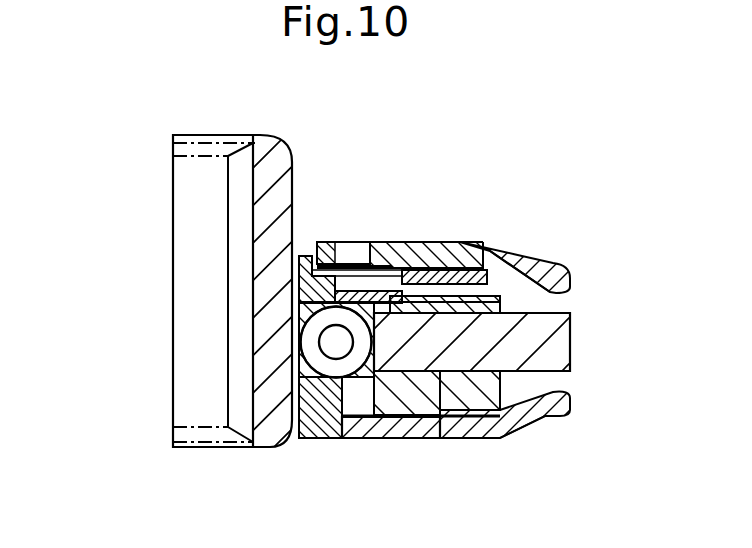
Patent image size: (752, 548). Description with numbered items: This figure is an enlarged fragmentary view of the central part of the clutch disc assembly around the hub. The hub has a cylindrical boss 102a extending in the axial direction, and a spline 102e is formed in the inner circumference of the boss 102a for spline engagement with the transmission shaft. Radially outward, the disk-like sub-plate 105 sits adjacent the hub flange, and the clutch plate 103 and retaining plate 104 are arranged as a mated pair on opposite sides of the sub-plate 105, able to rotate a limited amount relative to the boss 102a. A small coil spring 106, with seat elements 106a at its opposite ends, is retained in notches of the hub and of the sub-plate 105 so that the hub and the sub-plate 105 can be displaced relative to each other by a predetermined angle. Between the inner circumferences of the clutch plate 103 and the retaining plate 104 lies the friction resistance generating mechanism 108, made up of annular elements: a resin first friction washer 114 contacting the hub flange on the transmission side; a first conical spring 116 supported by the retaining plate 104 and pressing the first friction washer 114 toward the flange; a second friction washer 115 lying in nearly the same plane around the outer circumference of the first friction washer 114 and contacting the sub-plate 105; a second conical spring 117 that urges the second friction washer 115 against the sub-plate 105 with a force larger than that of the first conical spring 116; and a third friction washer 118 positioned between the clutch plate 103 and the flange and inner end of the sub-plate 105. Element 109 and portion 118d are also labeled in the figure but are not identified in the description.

The boss 102a is at (274, 170).
The spline 102e is at (240, 235).
The clutch plate 103 is at (508, 421).
The retaining plate 104 is at (432, 242).
The sub-plate 105 is at (542, 338).
The small coil spring 106 is at (292, 381).
The seat elements 106a is at (296, 314).
The friction resistance generating mechanism 108 is at (388, 239).
The upper plate surface 109 is at (419, 242).
The first friction washer 114 is at (307, 256).
The second friction washer 115 is at (540, 283).
The first conical spring 116 is at (343, 262).
The second conical spring 117 is at (488, 270).
The third friction washer 118 is at (426, 440).
The hook portion 118d is at (305, 432).